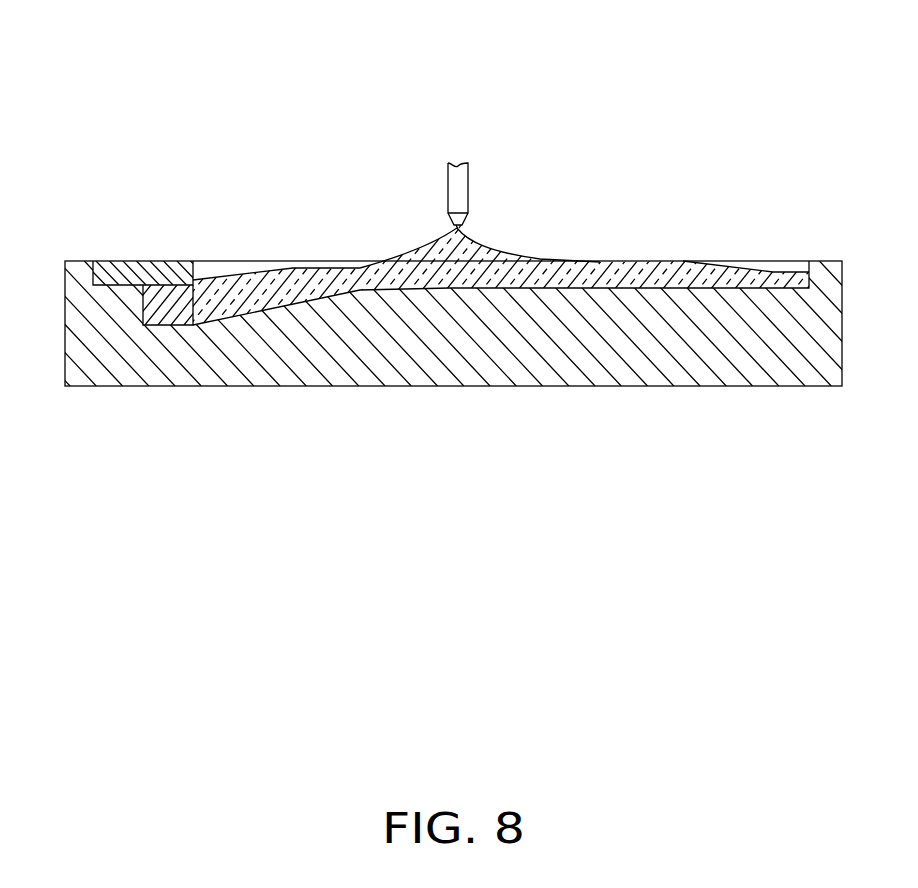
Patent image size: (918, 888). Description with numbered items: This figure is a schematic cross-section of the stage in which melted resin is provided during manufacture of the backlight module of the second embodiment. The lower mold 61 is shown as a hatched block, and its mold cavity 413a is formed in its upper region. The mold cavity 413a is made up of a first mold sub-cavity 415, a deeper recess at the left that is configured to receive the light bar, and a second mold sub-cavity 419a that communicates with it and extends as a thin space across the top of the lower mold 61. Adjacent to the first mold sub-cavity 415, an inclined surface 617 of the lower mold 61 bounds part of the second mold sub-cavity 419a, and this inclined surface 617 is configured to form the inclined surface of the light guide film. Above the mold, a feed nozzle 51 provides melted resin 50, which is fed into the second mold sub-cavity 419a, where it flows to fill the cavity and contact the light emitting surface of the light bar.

The mold cavity 413a is at (595, 97).
The first mold sub-cavity 415 is at (165, 318).
The inclined surface 617 is at (278, 305).
The second mold sub-cavity 419a is at (595, 287).
The melted resin 50 is at (433, 272).
The feed nozzle 51 is at (462, 188).
The lower mold 61 is at (707, 355).